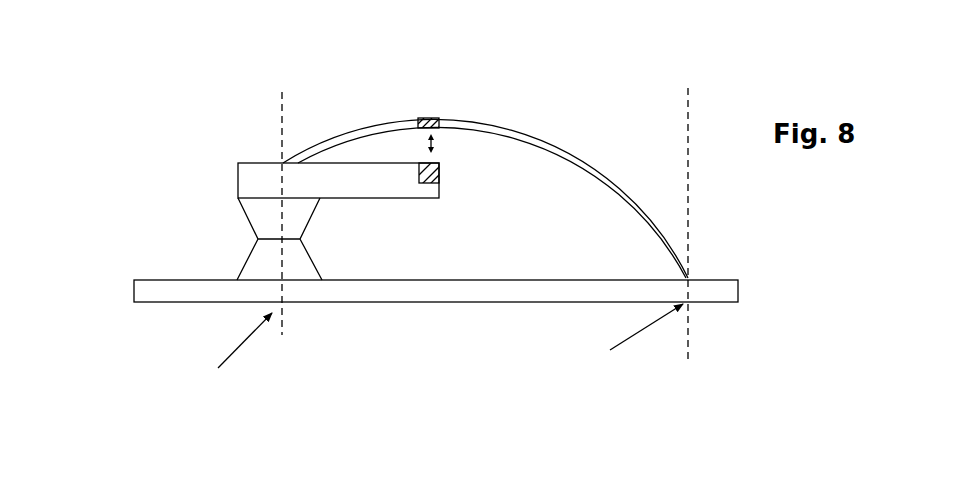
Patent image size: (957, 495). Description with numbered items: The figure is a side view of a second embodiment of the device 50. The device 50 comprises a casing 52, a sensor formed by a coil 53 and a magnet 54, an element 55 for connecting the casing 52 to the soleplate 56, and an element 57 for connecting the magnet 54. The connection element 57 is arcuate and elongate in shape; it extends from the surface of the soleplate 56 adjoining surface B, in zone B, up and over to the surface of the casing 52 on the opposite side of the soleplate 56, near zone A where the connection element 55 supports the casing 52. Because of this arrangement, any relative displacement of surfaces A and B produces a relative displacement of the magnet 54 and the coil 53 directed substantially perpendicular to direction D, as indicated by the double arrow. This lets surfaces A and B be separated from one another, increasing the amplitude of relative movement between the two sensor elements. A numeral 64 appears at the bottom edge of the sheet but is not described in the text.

The device 50 is at (187, 124).
The casing 52 is at (260, 177).
The coil 53 is at (437, 175).
The magnet 54 is at (422, 117).
The element for connecting the casing 55 is at (260, 218).
The soleplate 56 is at (460, 292).
The element for connecting the magnet 57 is at (505, 132).
The element on next figure (partially shown) 64 is at (372, 488).